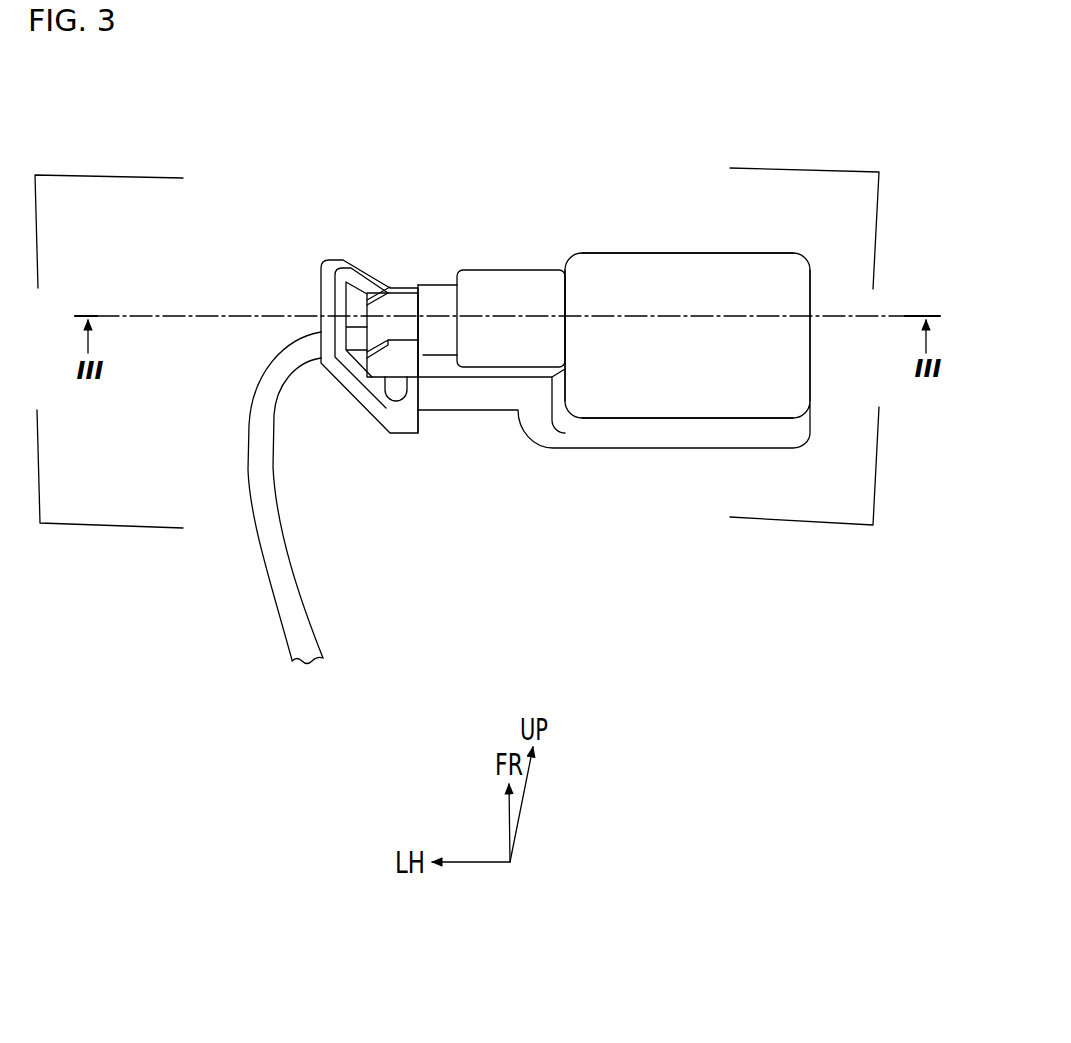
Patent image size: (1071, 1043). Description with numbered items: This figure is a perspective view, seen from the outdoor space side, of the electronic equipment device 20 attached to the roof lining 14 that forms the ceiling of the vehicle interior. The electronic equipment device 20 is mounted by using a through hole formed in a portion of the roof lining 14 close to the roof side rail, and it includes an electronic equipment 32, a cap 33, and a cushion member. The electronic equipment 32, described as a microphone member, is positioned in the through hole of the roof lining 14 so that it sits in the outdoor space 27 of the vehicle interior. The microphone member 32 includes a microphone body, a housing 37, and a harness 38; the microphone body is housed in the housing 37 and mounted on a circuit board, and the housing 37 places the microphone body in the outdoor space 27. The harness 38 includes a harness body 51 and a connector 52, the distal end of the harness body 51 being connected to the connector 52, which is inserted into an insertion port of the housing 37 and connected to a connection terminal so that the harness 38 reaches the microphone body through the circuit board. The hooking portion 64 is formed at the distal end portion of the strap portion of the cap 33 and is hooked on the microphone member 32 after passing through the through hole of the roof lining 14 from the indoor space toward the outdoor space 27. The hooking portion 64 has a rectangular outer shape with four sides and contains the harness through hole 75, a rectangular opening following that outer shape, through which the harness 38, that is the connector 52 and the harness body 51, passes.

The roof lining 14 is at (400, 307).
The electronic equipment device 20 is at (740, 226).
The outdoor space 27 is at (524, 154).
The electronic equipment 32 is at (627, 251).
The cap 33 is at (316, 264).
The housing 37 is at (672, 293).
The harness 38 is at (251, 391).
The harness body 51 is at (252, 487).
The connector 52 is at (398, 292).
The hooking portion 64 is at (321, 298).
The harness through hole 75 is at (372, 396).